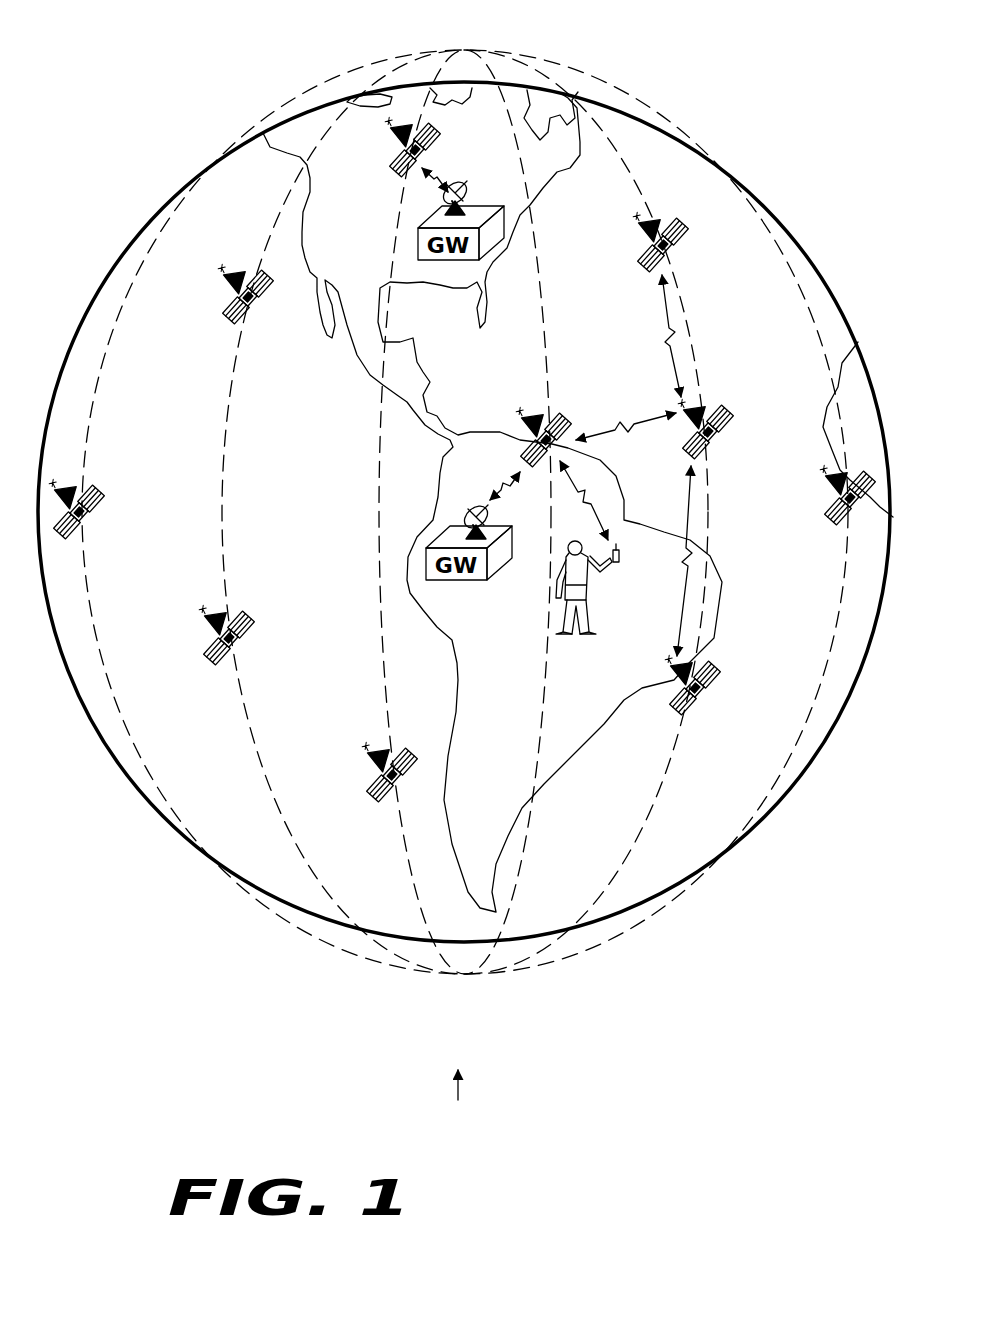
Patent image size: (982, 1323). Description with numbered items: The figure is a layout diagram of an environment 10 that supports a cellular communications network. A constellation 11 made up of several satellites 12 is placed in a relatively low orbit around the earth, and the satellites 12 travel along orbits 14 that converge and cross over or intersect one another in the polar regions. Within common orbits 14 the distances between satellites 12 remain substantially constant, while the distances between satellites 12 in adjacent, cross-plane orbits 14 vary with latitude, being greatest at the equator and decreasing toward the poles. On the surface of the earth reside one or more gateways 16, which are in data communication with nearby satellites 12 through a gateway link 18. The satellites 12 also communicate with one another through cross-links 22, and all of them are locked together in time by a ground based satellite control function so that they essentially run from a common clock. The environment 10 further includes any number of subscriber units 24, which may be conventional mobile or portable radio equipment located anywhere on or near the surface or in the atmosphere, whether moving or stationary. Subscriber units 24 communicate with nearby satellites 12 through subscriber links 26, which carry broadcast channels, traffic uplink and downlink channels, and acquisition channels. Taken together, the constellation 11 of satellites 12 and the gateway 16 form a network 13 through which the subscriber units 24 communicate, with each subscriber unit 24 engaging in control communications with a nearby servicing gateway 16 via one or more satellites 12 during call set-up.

The environment 10 is at (458, 1107).
The constellation 11 is at (463, 50).
The satellites 12 is at (392, 175).
The network 13 is at (220, 948).
The orbits 14 is at (276, 212).
The gateways 16 is at (485, 204).
The gateway link 18 is at (490, 471).
The cross-links 22 is at (666, 322).
The subscriber units 24 is at (620, 562).
The subscriber links 26 is at (623, 497).